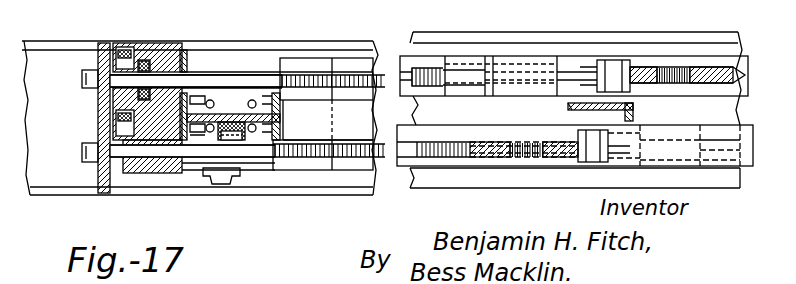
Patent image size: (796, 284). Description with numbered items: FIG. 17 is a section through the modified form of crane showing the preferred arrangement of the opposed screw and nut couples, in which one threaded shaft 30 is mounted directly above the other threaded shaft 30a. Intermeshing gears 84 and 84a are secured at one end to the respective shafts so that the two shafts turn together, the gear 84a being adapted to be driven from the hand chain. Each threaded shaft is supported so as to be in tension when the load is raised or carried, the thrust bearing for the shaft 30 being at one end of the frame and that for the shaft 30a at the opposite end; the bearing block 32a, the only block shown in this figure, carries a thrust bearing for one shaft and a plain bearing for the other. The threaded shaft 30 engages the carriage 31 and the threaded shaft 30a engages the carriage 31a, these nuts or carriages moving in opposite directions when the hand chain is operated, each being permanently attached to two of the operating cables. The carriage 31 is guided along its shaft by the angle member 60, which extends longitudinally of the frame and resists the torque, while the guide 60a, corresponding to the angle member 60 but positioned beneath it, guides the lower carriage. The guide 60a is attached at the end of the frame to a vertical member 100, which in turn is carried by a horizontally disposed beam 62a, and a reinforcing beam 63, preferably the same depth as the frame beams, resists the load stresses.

The gear 84 is at (78, 44).
The gear 84a is at (98, 130).
The bearing block 32a is at (186, 63).
The threaded shaft 30 is at (225, 80).
The horizontally disposed beam 62a is at (265, 70).
The vertical member 100 is at (328, 120).
The threaded shaft 30a is at (263, 158).
The guide 60a is at (430, 62).
The carriage 31 is at (563, 58).
The reinforcing beam 63 is at (690, 33).
The angle member 60 is at (462, 168).
The carriage 31a is at (600, 168).